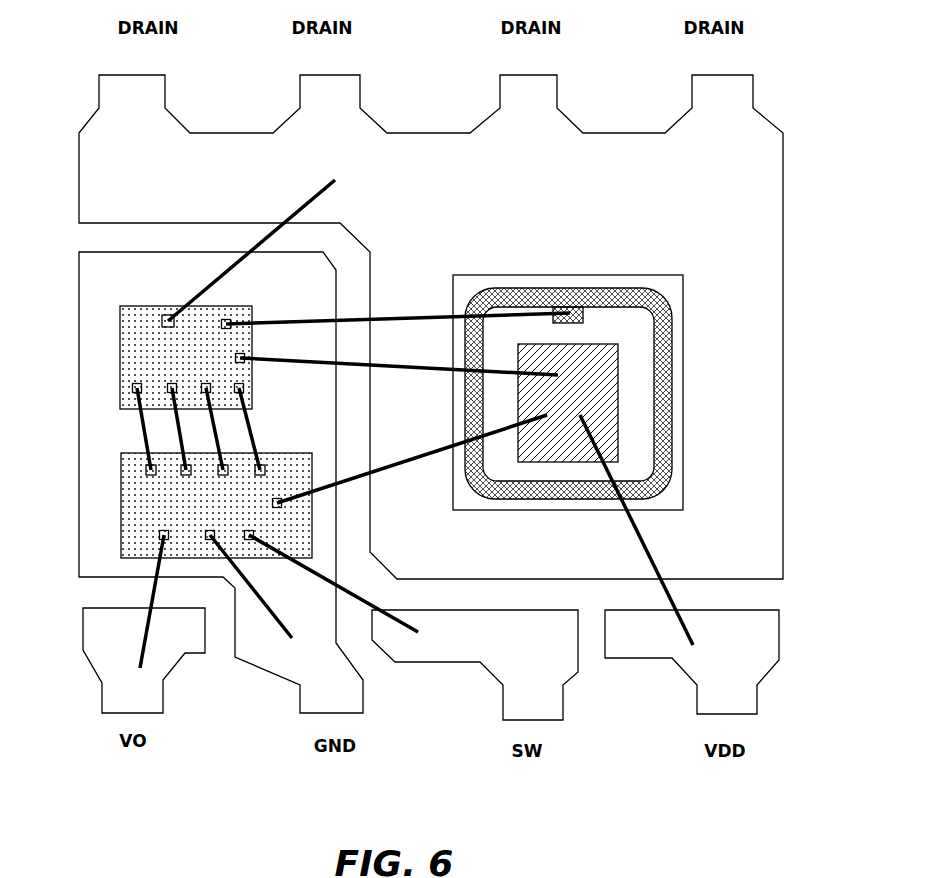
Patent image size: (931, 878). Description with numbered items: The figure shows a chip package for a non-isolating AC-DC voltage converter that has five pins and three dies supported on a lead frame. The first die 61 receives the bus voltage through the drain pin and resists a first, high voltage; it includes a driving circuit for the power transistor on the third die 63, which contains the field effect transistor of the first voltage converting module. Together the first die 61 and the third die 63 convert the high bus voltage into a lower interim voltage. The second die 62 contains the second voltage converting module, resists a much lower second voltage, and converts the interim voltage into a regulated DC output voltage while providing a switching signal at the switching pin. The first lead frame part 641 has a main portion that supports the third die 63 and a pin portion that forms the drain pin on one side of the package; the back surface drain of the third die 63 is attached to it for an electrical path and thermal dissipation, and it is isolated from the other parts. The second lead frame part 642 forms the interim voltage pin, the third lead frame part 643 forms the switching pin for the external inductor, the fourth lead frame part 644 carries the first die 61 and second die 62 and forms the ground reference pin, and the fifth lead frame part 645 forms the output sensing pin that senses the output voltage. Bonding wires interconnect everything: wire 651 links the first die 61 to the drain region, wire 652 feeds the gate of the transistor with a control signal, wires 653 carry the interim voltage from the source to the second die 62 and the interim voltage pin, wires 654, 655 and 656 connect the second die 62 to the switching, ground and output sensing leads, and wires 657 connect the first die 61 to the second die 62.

The first die 61 is at (120, 348).
The second die 62 is at (121, 505).
The third die 63 is at (683, 325).
The first lead frame part 641 is at (783, 198).
The second lead frame part 642 is at (683, 675).
The third lead frame part 643 is at (500, 682).
The fourth lead frame part 644 is at (363, 713).
The fifth lead frame part 645 is at (164, 682).
The bonding wire 651 is at (330, 190).
The electrical connecting structure 652 is at (403, 316).
The electrical connecting structure 653 is at (407, 368).
The bonding wire 654 is at (352, 586).
The bonding wire 655 is at (263, 595).
The bonding wire 656 is at (157, 587).
The bonding wires 657 is at (138, 423).